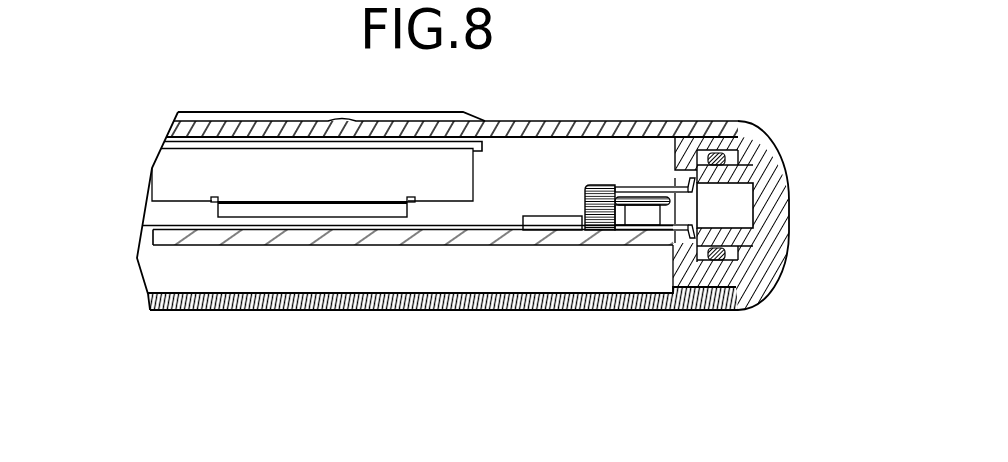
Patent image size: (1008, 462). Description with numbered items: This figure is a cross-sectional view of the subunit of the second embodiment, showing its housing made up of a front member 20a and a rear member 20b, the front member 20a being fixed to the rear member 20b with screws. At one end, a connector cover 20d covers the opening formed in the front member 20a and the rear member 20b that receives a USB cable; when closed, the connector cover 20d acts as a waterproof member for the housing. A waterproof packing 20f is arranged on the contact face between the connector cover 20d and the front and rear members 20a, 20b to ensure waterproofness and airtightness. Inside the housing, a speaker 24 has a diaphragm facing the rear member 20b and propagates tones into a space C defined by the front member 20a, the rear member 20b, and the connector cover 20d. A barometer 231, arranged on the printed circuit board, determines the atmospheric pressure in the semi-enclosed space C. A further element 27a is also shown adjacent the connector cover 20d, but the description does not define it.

The front member 20a is at (597, 123).
The rear member 20b is at (612, 300).
The connector cover 20d is at (785, 223).
The waterproof packing 20f is at (723, 262).
The speaker 24 is at (192, 202).
The barometer 231 is at (552, 222).
The connector terminal 27a is at (637, 183).
The space C is at (606, 154).